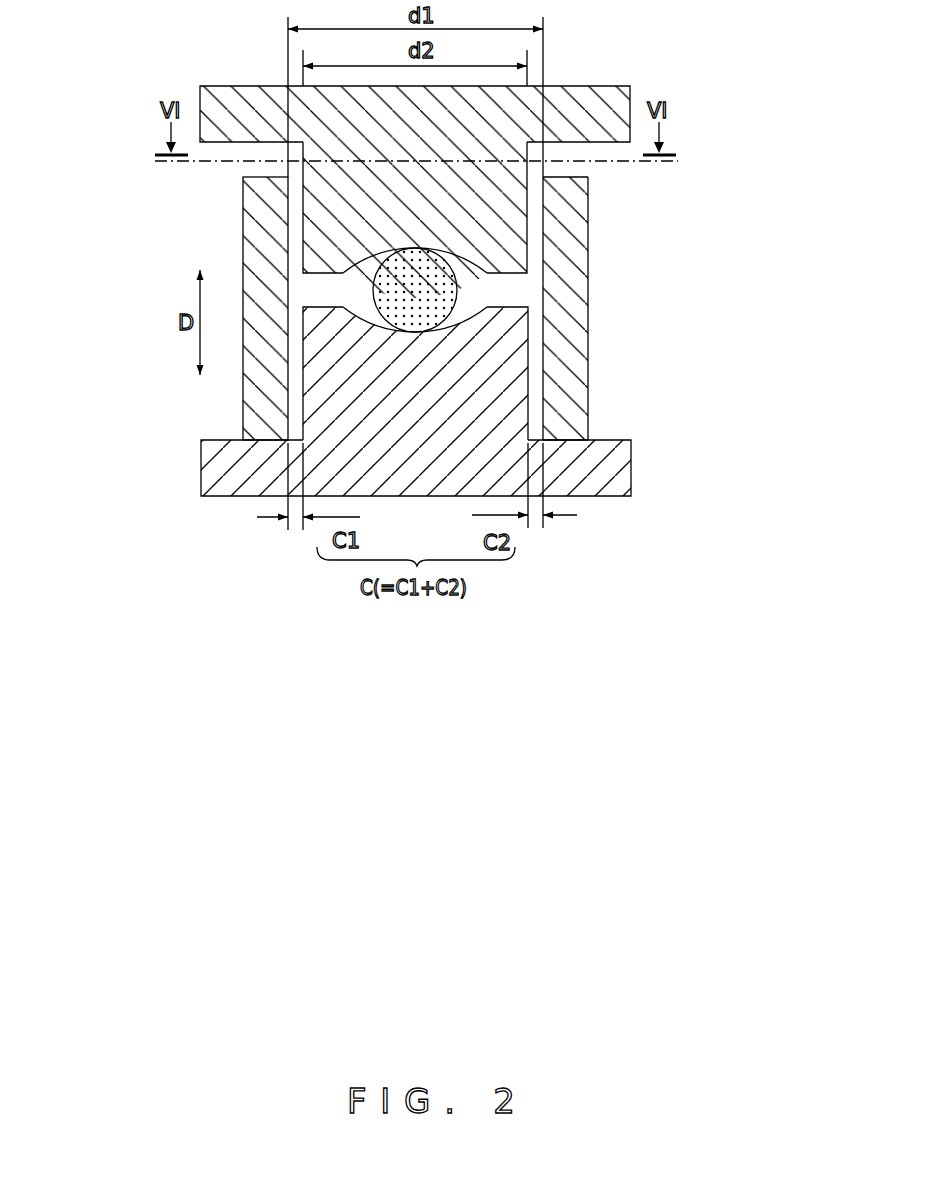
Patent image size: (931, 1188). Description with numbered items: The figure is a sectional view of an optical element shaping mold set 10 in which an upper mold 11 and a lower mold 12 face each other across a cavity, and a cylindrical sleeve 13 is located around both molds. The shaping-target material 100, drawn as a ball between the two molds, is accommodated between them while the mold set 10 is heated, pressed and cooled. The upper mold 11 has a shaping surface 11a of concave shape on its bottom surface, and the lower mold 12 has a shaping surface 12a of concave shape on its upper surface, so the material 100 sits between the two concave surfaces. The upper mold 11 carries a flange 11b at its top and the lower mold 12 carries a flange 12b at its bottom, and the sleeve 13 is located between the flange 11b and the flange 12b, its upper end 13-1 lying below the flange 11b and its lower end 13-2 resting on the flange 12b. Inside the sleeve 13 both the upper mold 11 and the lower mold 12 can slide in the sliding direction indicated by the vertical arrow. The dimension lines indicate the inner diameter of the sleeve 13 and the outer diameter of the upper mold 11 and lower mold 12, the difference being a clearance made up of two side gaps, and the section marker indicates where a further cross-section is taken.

The optical element shaping mold set 10 is at (177, 66).
The upper mold 11 is at (567, 83).
The shaping surface 11a is at (468, 258).
The flange 11b is at (630, 86).
The lower mold 12 is at (578, 497).
The shaping surface 12a is at (475, 323).
The flange 12b is at (627, 468).
The sleeve 13 is at (588, 375).
The upper end 13-1 is at (573, 177).
The lower end 13-2 is at (586, 452).
The shaping-target material 100 is at (383, 278).